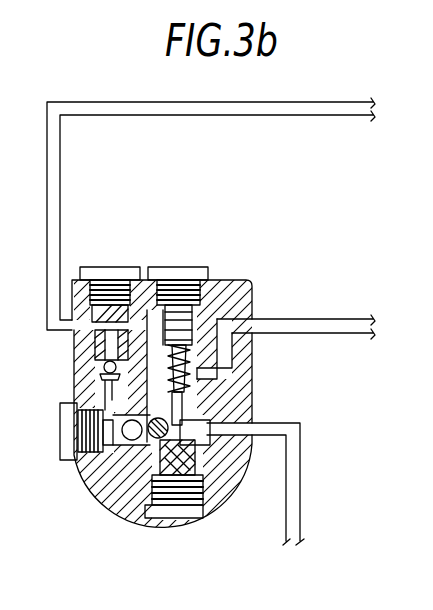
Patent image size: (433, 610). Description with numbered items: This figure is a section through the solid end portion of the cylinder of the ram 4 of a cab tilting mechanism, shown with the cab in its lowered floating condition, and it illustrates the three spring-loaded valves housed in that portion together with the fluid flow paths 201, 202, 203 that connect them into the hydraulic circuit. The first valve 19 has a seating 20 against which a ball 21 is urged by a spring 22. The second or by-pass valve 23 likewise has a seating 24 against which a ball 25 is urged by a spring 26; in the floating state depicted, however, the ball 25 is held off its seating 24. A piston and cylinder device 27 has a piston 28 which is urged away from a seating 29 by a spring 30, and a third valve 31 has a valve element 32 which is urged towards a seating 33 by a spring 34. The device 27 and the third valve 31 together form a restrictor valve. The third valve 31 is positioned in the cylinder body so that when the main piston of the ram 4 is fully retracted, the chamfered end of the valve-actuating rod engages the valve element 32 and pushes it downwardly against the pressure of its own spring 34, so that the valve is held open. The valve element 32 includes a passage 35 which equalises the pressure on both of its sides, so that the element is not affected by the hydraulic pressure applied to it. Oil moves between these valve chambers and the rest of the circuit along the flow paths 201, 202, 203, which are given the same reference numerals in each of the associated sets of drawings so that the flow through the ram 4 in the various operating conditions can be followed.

The ram 4 is at (256, 305).
The first valve 19 is at (105, 283).
The seating 20 is at (92, 343).
The ball 21 is at (98, 371).
The spring 22 is at (76, 392).
The by-pass valve 23 is at (61, 445).
The seating 24 is at (155, 398).
The ball 25 is at (130, 457).
The spring 26 is at (125, 450).
The piston and cylinder device 27 is at (177, 283).
The piston 28 is at (216, 297).
The seating 29 is at (213, 407).
The spring 30 is at (201, 372).
The third valve 31 is at (190, 490).
The valve element 32 is at (140, 445).
The seating 33 is at (208, 423).
The spring 34 is at (236, 478).
The passage 35 is at (238, 446).
The fluid flow path 201 is at (275, 108).
The fluid flow path 202 is at (352, 334).
The fluid flow path 203 is at (300, 505).